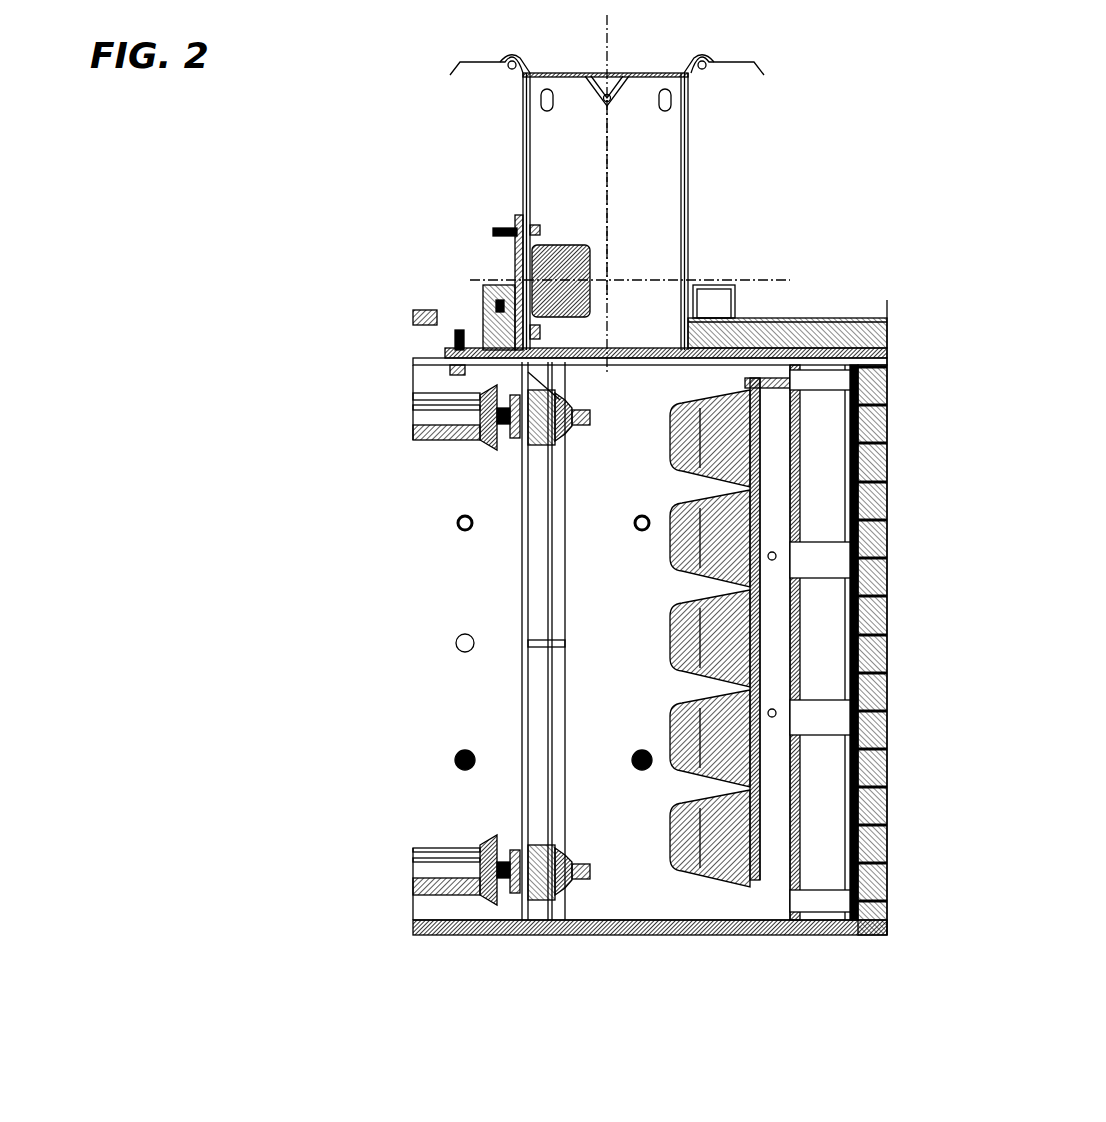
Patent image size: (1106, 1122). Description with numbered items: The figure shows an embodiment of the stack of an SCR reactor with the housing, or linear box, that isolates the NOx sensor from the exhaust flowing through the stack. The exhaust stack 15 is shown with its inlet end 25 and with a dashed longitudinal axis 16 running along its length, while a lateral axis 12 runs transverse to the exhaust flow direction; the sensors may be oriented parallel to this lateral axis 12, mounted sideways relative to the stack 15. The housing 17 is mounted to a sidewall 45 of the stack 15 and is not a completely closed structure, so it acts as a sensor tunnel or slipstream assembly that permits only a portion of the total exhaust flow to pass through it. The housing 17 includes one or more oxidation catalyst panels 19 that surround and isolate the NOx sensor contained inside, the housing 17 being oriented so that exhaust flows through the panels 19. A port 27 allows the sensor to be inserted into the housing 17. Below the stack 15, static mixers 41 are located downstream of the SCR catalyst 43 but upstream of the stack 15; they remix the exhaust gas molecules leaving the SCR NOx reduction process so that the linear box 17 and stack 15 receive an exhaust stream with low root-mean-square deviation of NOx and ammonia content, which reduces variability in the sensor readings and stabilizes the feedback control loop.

The lateral axis 12 is at (735, 275).
The exhaust stack 15 is at (690, 172).
The longitudinal axis 16 is at (600, 170).
The housing 17 is at (575, 245).
The oxidation catalyst panel 19 is at (535, 265).
The inlet end 25 is at (650, 345).
The port 27 is at (660, 128).
The static mixer 41 is at (740, 515).
The SCR catalyst 43 is at (878, 575).
The sidewall 45 is at (565, 135).